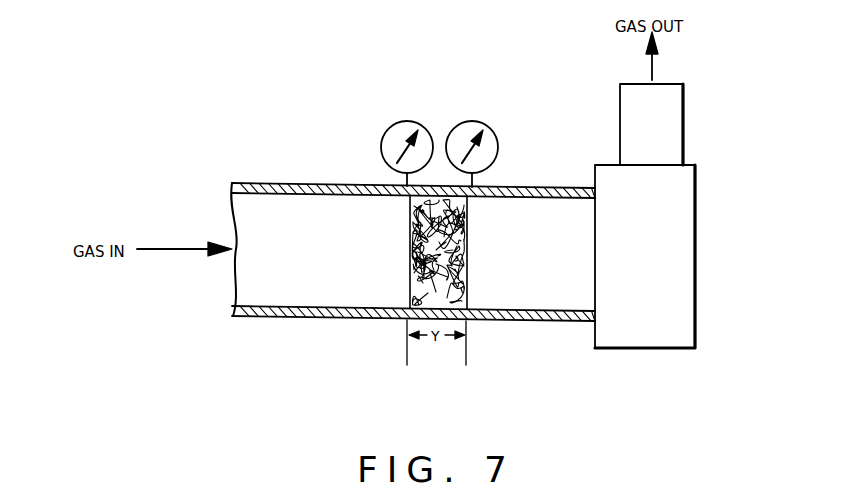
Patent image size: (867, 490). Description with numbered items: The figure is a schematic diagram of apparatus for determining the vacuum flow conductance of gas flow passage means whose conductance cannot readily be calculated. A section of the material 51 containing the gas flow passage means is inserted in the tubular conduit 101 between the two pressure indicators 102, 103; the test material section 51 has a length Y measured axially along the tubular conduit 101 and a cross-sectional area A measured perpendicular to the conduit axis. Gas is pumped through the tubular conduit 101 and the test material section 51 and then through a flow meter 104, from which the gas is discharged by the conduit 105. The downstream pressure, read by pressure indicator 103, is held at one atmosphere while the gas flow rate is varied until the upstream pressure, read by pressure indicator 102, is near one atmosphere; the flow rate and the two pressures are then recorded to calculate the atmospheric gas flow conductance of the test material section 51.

The tubular conduit 101 is at (284, 317).
The test material section 51 is at (410, 238).
The pressure indicator 102 is at (385, 135).
The pressure indicator 103 is at (496, 130).
The flow meter 104 is at (695, 268).
The conduit 105 is at (683, 135).